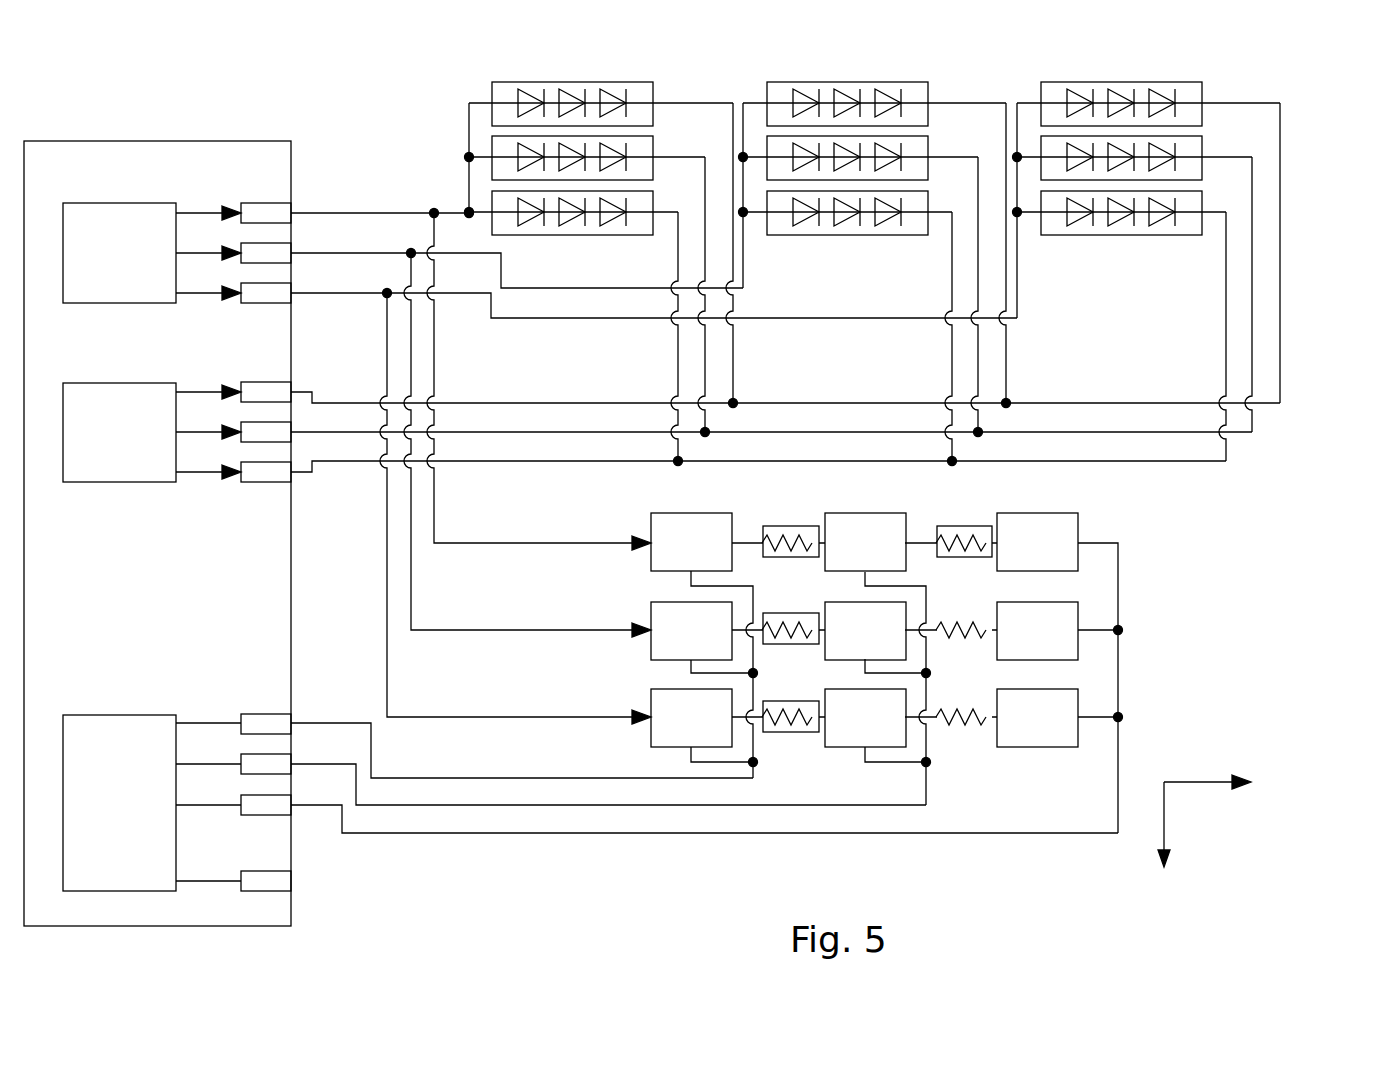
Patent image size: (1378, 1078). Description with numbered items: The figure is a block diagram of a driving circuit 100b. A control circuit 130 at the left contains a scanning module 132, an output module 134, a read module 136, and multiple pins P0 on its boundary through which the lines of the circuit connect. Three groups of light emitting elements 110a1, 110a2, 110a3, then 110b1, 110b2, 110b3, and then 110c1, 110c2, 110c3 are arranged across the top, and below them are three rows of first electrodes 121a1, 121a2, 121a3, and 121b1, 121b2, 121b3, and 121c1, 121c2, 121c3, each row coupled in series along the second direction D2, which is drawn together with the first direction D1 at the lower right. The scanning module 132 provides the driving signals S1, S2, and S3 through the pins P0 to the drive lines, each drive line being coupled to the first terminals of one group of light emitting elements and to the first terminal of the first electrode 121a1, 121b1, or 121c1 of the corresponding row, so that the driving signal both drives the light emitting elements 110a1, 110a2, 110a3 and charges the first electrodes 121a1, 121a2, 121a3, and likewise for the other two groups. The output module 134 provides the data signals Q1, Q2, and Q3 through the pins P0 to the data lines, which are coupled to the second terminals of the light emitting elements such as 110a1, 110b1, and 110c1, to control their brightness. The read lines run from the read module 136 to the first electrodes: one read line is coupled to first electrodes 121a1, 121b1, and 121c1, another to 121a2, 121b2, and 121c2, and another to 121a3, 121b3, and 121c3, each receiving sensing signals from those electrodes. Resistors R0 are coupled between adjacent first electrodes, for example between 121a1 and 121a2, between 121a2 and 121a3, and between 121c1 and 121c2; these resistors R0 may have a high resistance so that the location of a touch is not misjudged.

The driving circuit 100b is at (1362, 62).
The control circuit 130 is at (70, 172).
The scanning module 132 is at (98, 268).
The output module 134 is at (98, 446).
The read module 136 is at (98, 816).
The light emitting element 110a1 is at (653, 97).
The light emitting element 110a2 is at (653, 150).
The light emitting element 110a3 is at (556, 236).
The light emitting element 110b1 is at (928, 97).
The light emitting element 110b2 is at (928, 150).
The light emitting element 110b3 is at (830, 236).
The light emitting element 110c1 is at (1203, 97).
The light emitting element 110c2 is at (1203, 150).
The light emitting element 110c3 is at (1105, 236).
The first electrode 121a1 is at (657, 558).
The first electrode 121a2 is at (831, 558).
The first electrode 121a3 is at (1003, 558).
The first electrode 121b1 is at (657, 647).
The first electrode 121b2 is at (831, 647).
The first electrode 121b3 is at (1003, 647).
The first electrode 121c1 is at (657, 734).
The first electrode 121c2 is at (831, 734).
The first electrode 121c3 is at (1003, 734).
The resistor R0 is at (790, 523).
The pin P0 is at (262, 304).
The driving signal S1 is at (208, 204).
The driving signal S2 is at (208, 244).
The driving signal S3 is at (208, 284).
The data signal Q1 is at (208, 383).
The data signal Q2 is at (208, 423).
The data signal Q3 is at (208, 463).
The first direction D1 is at (1163, 841).
The second direction D2 is at (1225, 784).